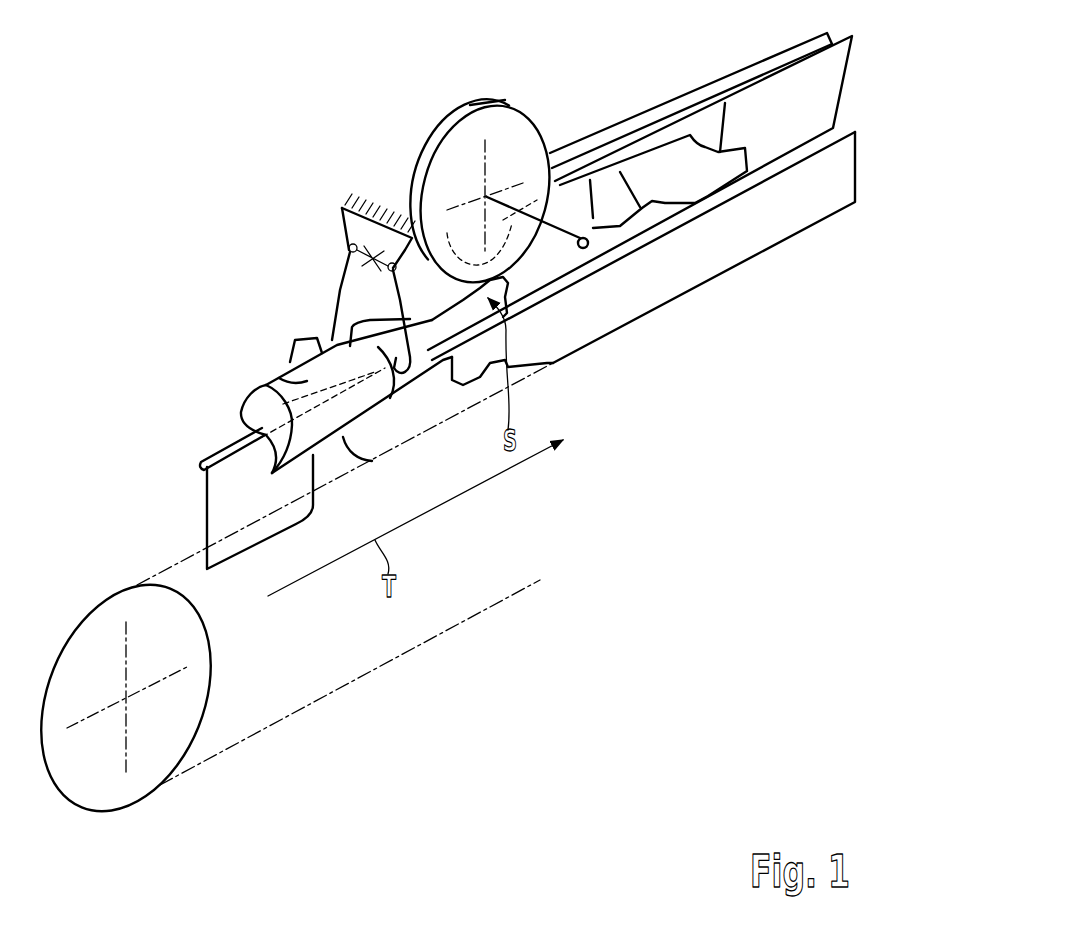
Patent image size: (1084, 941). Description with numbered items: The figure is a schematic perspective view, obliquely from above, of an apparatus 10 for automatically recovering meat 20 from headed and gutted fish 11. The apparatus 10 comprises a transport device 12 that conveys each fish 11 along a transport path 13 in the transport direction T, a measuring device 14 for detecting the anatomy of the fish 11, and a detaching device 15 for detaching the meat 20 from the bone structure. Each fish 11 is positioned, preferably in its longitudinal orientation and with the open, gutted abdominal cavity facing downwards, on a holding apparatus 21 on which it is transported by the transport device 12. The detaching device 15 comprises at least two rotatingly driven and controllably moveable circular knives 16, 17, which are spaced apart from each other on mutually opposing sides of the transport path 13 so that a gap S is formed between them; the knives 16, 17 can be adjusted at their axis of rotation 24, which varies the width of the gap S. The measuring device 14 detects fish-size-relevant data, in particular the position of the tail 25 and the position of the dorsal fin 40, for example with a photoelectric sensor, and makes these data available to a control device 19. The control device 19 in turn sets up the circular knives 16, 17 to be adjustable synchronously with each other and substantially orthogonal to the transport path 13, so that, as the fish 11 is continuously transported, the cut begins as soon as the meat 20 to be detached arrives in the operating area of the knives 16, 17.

The apparatus 10 is at (237, 107).
The fish 11 is at (290, 382).
The transport device 12 is at (218, 724).
The transport path 13 is at (400, 447).
The measuring device 14 is at (366, 196).
The detaching device 15 is at (506, 98).
The circular knife 16 is at (481, 106).
The circular knife 17 is at (527, 130).
The control device 19 is at (599, 118).
The meat 20 is at (256, 402).
The holding apparatus 21 is at (207, 496).
The axis of rotation 24 is at (583, 249).
The tail 25 is at (430, 357).
The dorsal fin 40 is at (310, 345).